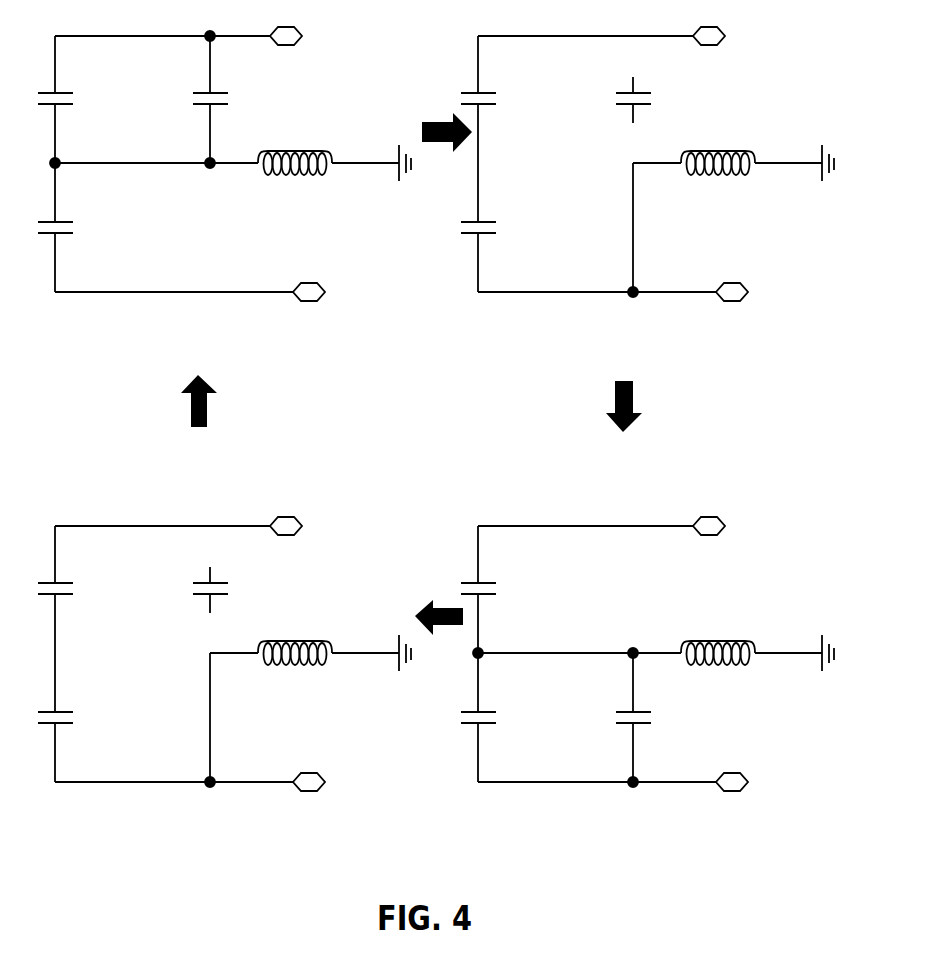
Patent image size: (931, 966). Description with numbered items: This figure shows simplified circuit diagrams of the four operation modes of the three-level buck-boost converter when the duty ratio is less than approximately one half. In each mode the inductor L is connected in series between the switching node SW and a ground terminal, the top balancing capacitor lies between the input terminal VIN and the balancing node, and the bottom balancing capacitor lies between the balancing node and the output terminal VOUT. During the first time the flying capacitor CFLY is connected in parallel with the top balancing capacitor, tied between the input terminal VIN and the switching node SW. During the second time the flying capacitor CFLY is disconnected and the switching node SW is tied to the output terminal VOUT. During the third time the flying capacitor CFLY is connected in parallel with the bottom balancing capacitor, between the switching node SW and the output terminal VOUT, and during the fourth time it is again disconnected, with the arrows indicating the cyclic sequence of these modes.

The flying capacitor CFLY is at (447, 403).
The inductor L is at (506, 395).
The switching node SW is at (368, 396).
The input terminal VIN is at (516, 281).
The output terminal VOUT is at (544, 537).